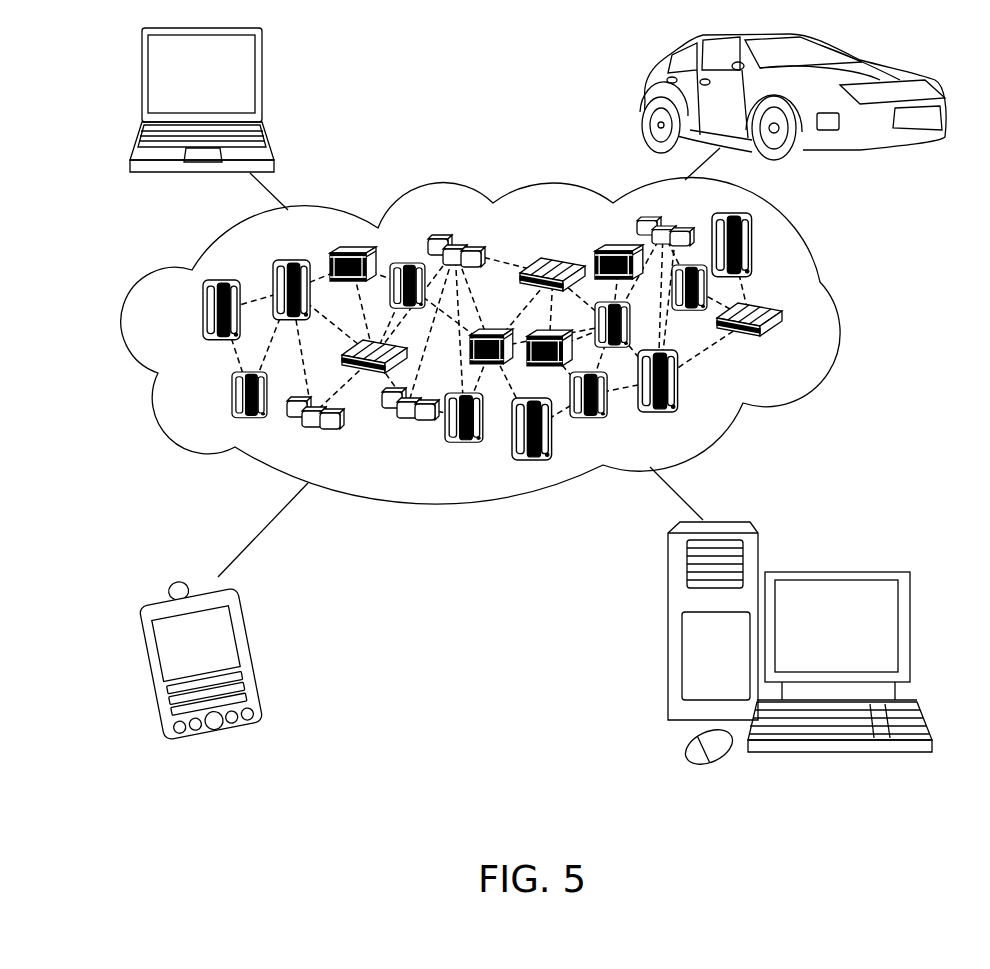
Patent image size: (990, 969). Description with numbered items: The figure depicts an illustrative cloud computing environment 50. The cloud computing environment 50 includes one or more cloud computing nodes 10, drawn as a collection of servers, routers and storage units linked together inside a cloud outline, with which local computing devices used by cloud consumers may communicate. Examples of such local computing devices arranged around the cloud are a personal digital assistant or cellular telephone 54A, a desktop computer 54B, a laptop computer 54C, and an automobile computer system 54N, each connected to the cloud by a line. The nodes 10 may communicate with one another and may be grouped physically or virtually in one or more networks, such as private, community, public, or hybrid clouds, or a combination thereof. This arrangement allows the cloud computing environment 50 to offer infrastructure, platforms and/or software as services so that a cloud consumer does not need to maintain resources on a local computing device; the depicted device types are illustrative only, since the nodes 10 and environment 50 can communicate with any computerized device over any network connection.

The cloud computing environment 50 is at (837, 320).
The cloud computing nodes 10 is at (790, 347).
The personal digital assistant or cellular telephone 54A is at (253, 654).
The desktop computer 54B is at (833, 570).
The laptop computer 54C is at (263, 80).
The automobile computer system 54N is at (642, 96).